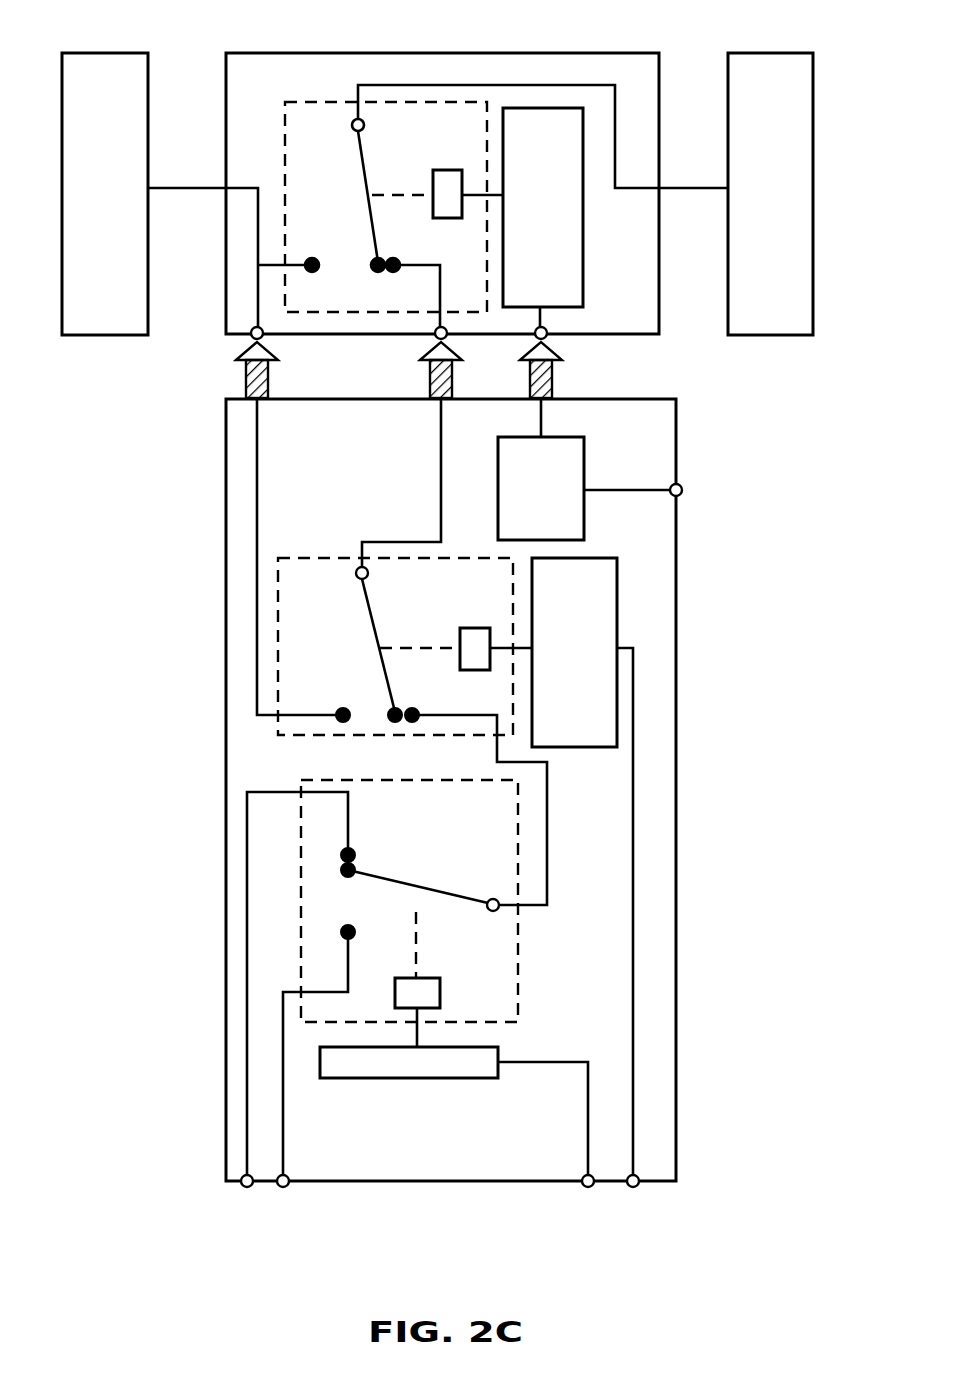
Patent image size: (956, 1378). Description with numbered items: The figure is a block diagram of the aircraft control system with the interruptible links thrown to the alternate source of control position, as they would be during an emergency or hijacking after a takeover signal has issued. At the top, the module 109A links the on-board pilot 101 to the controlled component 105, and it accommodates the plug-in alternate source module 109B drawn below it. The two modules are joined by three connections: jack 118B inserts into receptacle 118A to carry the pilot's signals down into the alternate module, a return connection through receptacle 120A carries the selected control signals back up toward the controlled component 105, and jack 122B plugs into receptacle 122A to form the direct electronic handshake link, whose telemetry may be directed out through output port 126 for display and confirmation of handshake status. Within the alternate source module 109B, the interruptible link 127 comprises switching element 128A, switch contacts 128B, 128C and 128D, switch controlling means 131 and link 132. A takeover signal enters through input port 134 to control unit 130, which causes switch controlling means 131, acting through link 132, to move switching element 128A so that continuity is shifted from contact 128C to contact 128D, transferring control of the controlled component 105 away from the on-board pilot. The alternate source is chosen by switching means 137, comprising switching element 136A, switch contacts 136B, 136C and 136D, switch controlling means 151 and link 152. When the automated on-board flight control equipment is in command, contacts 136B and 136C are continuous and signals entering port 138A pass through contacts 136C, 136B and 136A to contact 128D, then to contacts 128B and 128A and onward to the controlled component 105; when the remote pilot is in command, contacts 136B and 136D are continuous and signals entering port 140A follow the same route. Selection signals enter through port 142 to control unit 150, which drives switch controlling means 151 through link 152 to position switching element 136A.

The on-board pilot 101 is at (122, 193).
The controlled component 105 is at (793, 201).
The module 109A is at (432, 53).
The alternate source module 109B is at (677, 618).
The receptacle 118A is at (251, 330).
The jack 118B is at (246, 378).
The receptacle 120A is at (435, 337).
The receptacle 122A is at (548, 332).
The jack 122B is at (553, 388).
The output port 126 is at (681, 485).
The interruptible link 127 is at (333, 557).
The switching element 128A is at (372, 592).
The switch contact 128B is at (393, 723).
The switch contact 128C is at (341, 707).
The switch contact 128D is at (415, 711).
The control unit 130 is at (593, 665).
The switch controlling means 131 is at (460, 658).
The link 132 is at (394, 651).
The input port 134 is at (636, 1188).
The switching element 136A is at (432, 888).
The switch contact 136B is at (359, 868).
The switch contact 136C is at (356, 851).
The switch contact 136D is at (372, 922).
The switching means 137 is at (520, 958).
The port 138A is at (245, 1188).
The port 140A is at (284, 1188).
The port 142 is at (587, 1188).
The control unit 150 is at (408, 1080).
The switch controlling means 151 is at (440, 994).
The link 152 is at (418, 955).